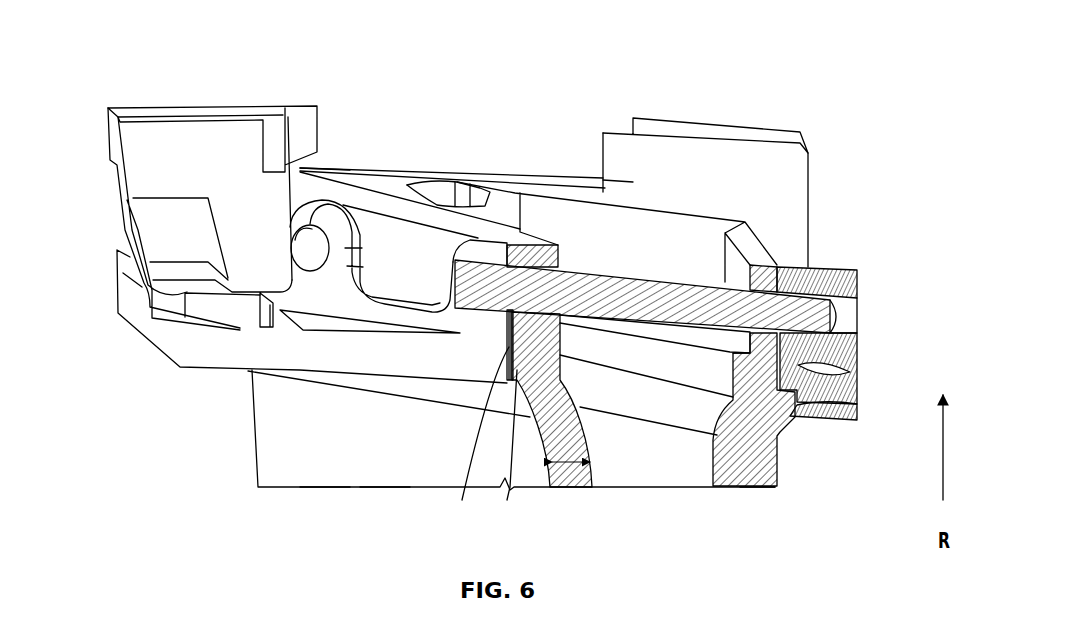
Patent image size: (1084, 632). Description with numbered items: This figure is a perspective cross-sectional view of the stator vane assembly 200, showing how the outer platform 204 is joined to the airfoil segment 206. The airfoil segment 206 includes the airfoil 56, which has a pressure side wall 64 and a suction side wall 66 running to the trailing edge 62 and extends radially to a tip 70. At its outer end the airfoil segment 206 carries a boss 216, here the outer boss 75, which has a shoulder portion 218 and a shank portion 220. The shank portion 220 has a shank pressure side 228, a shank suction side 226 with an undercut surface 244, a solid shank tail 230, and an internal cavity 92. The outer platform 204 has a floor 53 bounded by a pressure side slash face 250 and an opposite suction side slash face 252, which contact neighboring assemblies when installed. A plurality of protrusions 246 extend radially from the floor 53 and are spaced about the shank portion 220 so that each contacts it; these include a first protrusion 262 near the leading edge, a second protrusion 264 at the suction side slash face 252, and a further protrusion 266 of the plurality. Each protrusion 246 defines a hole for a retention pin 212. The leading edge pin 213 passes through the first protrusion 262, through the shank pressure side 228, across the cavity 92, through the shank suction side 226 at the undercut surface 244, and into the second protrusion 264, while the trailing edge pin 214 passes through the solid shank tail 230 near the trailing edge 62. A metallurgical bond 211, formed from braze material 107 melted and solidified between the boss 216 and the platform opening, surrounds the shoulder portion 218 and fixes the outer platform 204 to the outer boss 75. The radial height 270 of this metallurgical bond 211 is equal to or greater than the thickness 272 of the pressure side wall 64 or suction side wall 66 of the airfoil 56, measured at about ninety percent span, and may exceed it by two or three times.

The stator vane assembly 200 is at (829, 46).
The outer platform 204 is at (827, 138).
The airfoil segment 206 is at (835, 463).
The metallurgical bond 211 is at (508, 353).
The retention pins 212 is at (458, 161).
The leading edge pin 213 is at (683, 285).
The trailing edge pin 214 is at (288, 117).
The boss 216 is at (395, 105).
The outer boss 75 is at (422, 110).
The shoulder portion 218 is at (788, 418).
The shank portion 220 is at (720, 195).
The shank suction side 226 is at (633, 203).
The shank pressure side 228 is at (437, 208).
The solid shank tail 230 is at (370, 183).
The undercut surface 244 is at (778, 240).
The protrusions 246 is at (611, 191).
The first protrusion 262 is at (480, 248).
The second protrusion 264 is at (833, 268).
The side locating feature 266 is at (328, 198).
The pressure side slash face 250 is at (127, 300).
The suction side slash face 252 is at (860, 352).
The height 270 is at (563, 352).
The thickness 272 is at (571, 491).
The cavity 92 is at (559, 205).
The floor 53 is at (337, 360).
The trailing edge 62 is at (255, 443).
The airfoil 56 is at (322, 452).
The pressure side wall 64 is at (382, 452).
The braze material 107 is at (462, 500).
The tip 70 is at (507, 500).
The suction side wall 66 is at (777, 480).